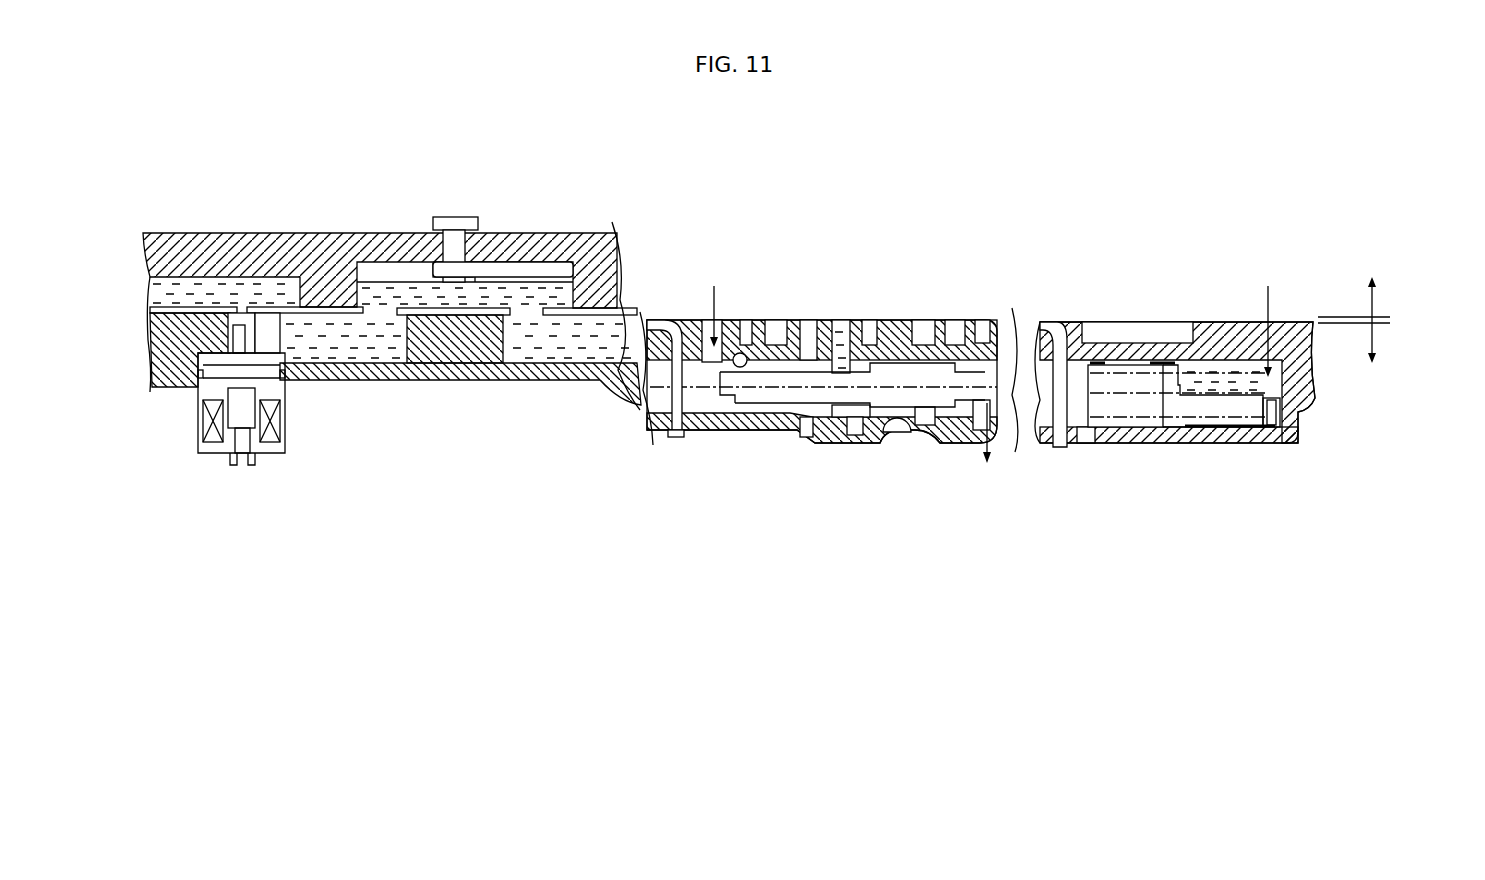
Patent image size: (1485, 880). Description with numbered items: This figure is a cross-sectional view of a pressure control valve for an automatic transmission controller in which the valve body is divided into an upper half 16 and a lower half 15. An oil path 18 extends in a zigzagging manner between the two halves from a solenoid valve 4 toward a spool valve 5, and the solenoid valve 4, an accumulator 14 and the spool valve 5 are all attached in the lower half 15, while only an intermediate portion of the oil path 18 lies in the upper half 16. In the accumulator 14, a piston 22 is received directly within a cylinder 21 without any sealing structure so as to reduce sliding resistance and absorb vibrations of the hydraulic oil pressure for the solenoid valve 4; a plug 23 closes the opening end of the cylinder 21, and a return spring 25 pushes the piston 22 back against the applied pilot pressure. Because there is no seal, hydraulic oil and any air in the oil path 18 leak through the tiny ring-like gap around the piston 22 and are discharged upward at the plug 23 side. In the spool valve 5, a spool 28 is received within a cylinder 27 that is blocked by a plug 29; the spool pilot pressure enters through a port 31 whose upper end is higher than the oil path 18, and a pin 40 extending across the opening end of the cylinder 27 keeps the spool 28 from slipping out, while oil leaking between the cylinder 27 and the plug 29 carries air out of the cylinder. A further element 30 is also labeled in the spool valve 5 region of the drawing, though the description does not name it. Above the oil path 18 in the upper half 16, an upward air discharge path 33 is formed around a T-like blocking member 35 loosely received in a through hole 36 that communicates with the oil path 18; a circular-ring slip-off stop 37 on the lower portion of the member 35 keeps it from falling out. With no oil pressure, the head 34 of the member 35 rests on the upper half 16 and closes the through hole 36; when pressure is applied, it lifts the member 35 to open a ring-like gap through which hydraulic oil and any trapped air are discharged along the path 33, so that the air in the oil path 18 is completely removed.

The solenoid valve 4 is at (210, 480).
The spool valve 5 is at (820, 424).
The accumulator 14 is at (1184, 411).
The lower half of the valve body 15 is at (813, 353).
The upper half of the valve body 16 is at (806, 315).
The oil path 18 is at (381, 292).
The cylinder 21 is at (1258, 374).
The piston 22 is at (1168, 362).
The plug 23 is at (1072, 438).
The return spring 25 is at (1130, 428).
The cylinder 27 is at (889, 410).
The spool 28 is at (865, 368).
The plug 29 is at (693, 430).
The ball 30 is at (741, 355).
The port 31 is at (690, 352).
The air discharge path 33 is at (478, 208).
The head 34 is at (430, 228).
The T-like blocking member 35 is at (457, 231).
The through hole 36 is at (480, 266).
The slip-off stop 37 is at (472, 282).
The pin 40 is at (673, 437).